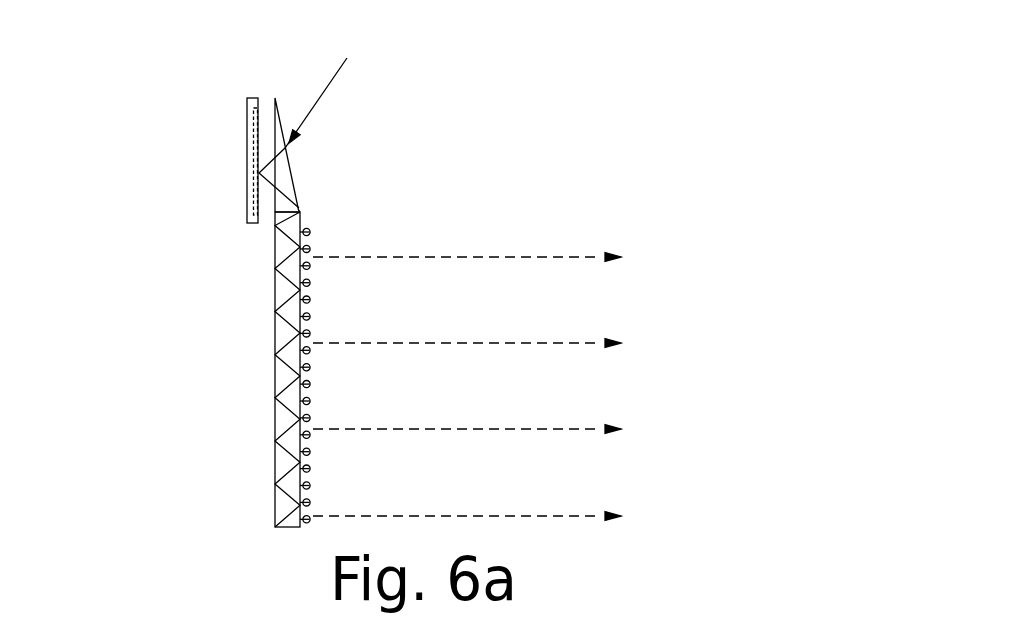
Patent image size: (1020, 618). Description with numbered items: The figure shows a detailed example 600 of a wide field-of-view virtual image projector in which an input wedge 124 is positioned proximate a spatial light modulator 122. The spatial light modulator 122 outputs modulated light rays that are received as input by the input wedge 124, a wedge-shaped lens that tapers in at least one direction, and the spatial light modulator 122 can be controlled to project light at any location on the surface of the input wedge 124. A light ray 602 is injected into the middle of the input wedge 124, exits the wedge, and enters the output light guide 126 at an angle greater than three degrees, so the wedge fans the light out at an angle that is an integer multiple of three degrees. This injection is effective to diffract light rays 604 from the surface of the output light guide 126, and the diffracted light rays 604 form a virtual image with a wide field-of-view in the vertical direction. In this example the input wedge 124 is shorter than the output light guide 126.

The detailed example 600 is at (117, 69).
The spatial light modulator 122 is at (235, 118).
The input wedge 124 is at (299, 179).
The light ray 602 is at (334, 81).
The output light guide 126 is at (268, 335).
The diffracted light rays 604 is at (621, 257).